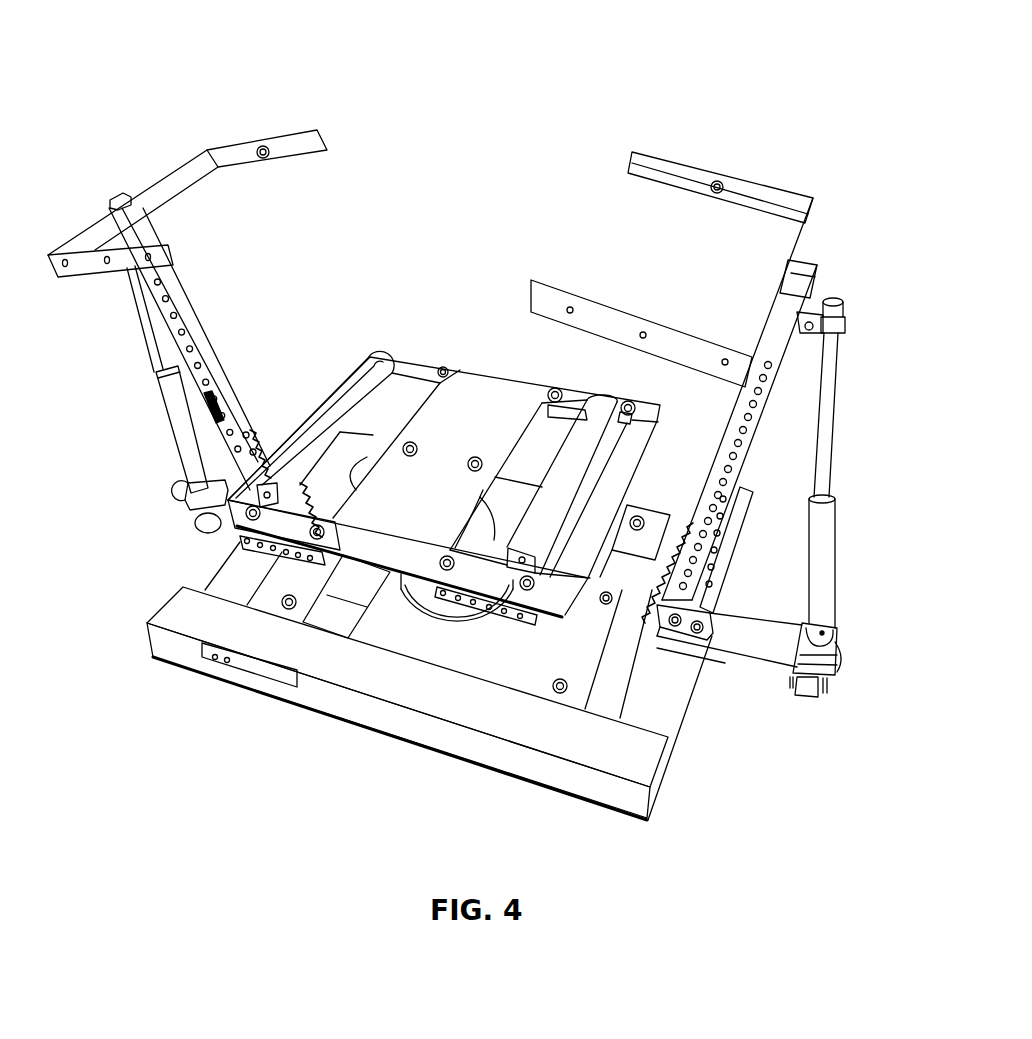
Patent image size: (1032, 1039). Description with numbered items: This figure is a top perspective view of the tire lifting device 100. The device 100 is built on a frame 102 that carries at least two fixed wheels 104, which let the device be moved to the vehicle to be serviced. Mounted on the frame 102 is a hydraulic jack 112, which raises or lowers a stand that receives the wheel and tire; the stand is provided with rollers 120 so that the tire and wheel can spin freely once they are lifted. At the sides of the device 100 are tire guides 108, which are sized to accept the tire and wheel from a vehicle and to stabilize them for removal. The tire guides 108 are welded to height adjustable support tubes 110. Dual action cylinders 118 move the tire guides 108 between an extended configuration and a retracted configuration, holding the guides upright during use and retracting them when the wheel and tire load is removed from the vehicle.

The device 100 is at (752, 58).
The frame 102 is at (652, 522).
The fixed wheels 104 is at (810, 697).
The tire guides 108 is at (297, 138).
The height adjustable support tubes 110 is at (200, 312).
The hydraulic jack 112 is at (483, 490).
The dual action cylinders 118 is at (173, 408).
The rollers 120 is at (373, 367).